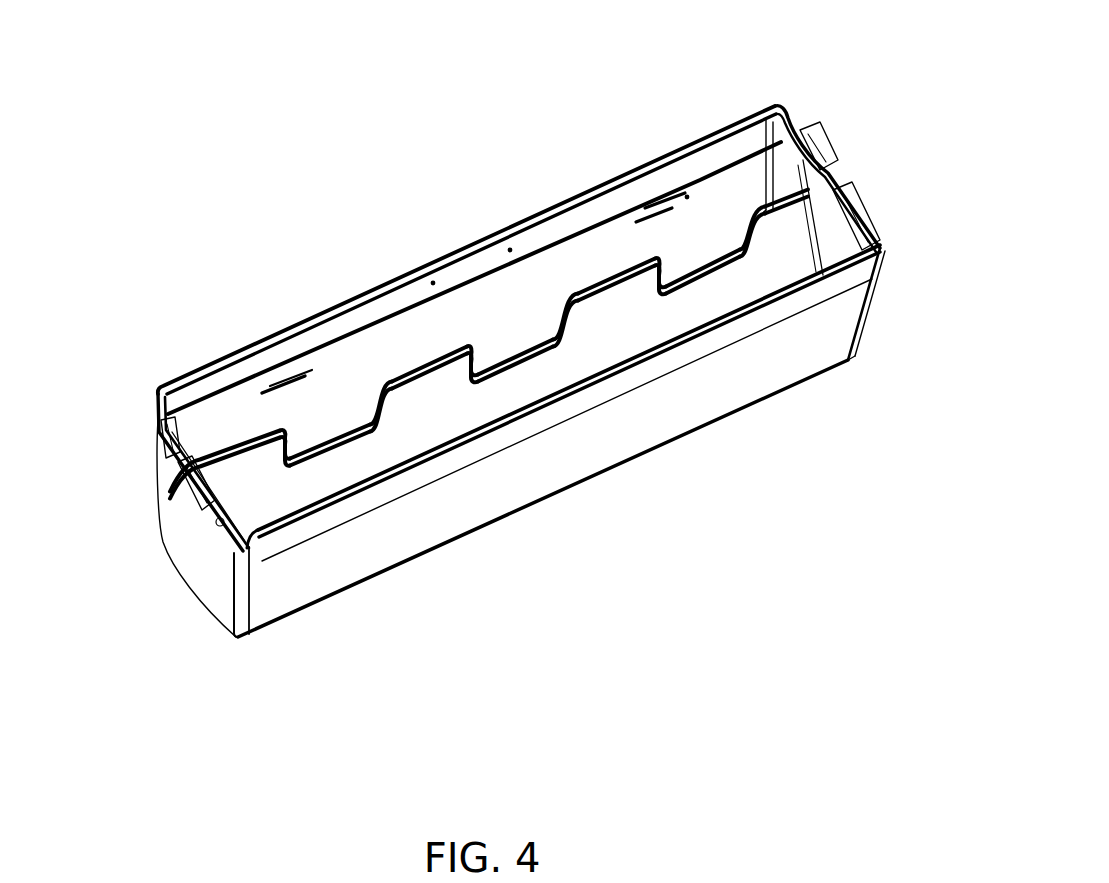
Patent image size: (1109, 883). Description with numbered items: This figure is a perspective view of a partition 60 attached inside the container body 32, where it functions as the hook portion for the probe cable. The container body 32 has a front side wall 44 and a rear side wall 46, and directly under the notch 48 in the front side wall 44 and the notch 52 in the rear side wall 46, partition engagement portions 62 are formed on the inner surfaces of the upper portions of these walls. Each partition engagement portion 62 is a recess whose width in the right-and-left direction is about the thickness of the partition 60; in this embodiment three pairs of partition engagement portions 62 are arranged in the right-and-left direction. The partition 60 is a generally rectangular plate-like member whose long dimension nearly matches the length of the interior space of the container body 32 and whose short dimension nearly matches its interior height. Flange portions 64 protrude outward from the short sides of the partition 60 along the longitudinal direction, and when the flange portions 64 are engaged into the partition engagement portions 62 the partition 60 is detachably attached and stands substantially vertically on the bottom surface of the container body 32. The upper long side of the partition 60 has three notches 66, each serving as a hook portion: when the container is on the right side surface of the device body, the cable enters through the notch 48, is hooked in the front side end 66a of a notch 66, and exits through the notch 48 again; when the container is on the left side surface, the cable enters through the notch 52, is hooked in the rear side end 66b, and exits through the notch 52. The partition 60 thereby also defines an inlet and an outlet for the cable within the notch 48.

The container body 32 is at (614, 112).
The front side wall 44 is at (212, 585).
The rear side wall 46 is at (879, 293).
The notch 48 is at (148, 430).
The notch 52 is at (803, 117).
The partition 60 is at (598, 334).
The partition engagement portion 62 is at (152, 446).
The flange portion 64 is at (196, 524).
The notch 66 is at (328, 428).
The front side end 66a is at (284, 443).
The rear side end 66b is at (378, 407).